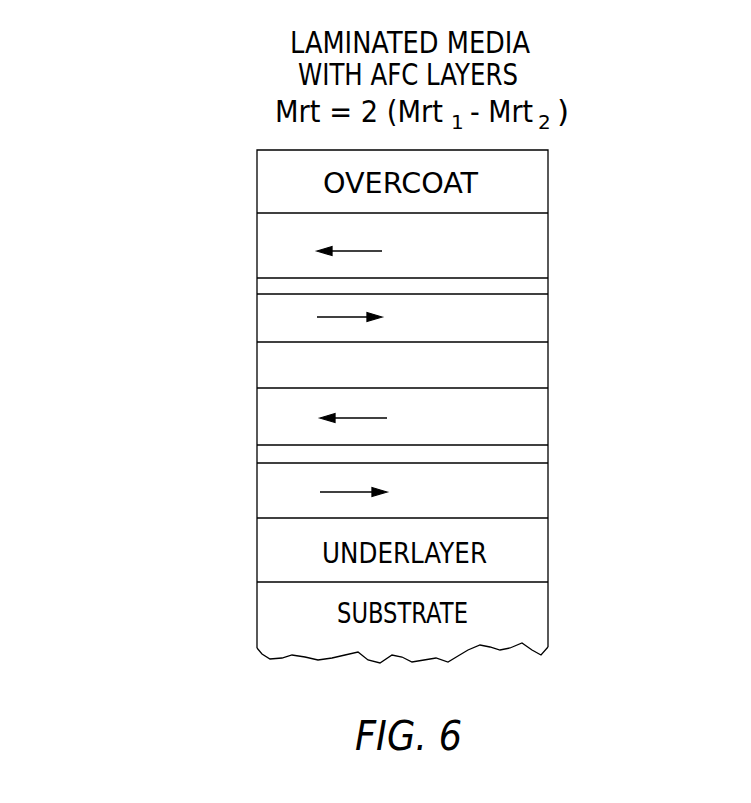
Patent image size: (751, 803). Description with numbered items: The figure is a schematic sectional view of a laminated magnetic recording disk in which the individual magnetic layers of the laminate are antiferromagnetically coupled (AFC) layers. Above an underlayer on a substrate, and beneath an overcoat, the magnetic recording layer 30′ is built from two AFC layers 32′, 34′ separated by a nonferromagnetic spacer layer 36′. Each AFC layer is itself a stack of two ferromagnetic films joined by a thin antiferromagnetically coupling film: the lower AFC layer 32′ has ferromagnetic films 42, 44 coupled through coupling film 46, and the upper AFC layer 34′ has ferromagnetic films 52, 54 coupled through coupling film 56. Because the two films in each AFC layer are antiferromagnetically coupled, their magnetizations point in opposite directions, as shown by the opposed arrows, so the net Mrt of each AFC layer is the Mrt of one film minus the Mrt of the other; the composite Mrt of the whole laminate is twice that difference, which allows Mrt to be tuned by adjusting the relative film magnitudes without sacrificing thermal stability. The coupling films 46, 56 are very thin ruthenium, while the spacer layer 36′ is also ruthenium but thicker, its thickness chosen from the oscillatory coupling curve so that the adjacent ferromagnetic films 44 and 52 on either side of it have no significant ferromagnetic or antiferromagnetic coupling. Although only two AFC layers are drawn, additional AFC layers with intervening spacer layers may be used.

The magnetic recording layer 30′ is at (180, 215).
The AFC layer 32′ is at (248, 390).
The AFC layer 34′ is at (248, 215).
The nonferromagnetic spacer layer 36′ is at (275, 368).
The ferromagnetic film 42 is at (542, 497).
The ferromagnetic film 44 is at (540, 408).
The antiferromagnetically coupling film 46 is at (542, 455).
The ferromagnetic film 52 is at (538, 327).
The ferromagnetic film 54 is at (535, 260).
The antiferromagnetically coupling film 56 is at (540, 285).